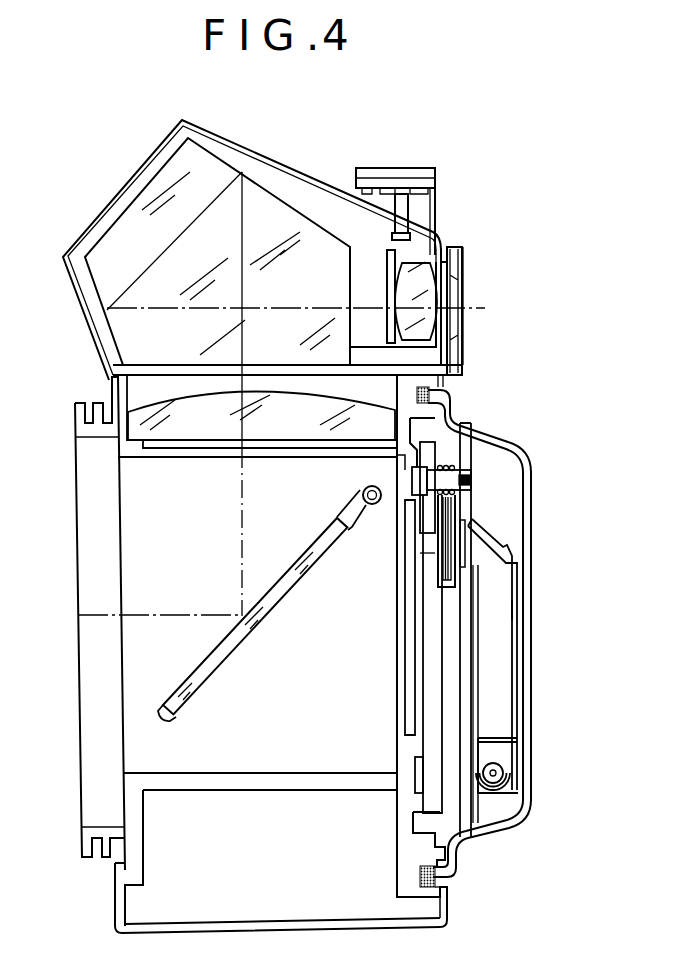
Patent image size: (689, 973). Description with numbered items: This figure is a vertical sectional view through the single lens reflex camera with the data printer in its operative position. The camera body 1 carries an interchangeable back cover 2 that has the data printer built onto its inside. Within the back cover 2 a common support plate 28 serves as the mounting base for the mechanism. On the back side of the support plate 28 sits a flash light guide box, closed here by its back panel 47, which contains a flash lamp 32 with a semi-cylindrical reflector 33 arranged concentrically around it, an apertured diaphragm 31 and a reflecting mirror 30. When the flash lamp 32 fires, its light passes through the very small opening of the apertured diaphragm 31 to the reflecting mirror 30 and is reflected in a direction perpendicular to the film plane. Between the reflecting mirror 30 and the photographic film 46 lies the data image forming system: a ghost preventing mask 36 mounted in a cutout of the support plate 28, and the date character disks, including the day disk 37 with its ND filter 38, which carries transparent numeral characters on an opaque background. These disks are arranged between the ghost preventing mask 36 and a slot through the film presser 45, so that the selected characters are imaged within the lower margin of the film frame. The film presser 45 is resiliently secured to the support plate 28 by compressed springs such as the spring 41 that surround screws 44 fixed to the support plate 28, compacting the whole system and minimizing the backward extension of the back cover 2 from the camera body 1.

The camera body 1 is at (268, 900).
The back cover 2 is at (530, 650).
The support plate 28 is at (465, 447).
The reflecting mirror 30 is at (500, 538).
The apertured diaphragm 31 is at (503, 737).
The flash lamp 32 is at (513, 773).
The semi-cylindrical reflector 33 is at (490, 786).
The ghost preventing mask 36 is at (463, 527).
The disk 37 is at (453, 580).
The ND filter 38 is at (443, 585).
The compressed spring 41 is at (446, 471).
The screw 44 is at (450, 481).
The film presser 45 is at (433, 698).
The photographic film 46 is at (422, 635).
The back panel 47 is at (517, 610).